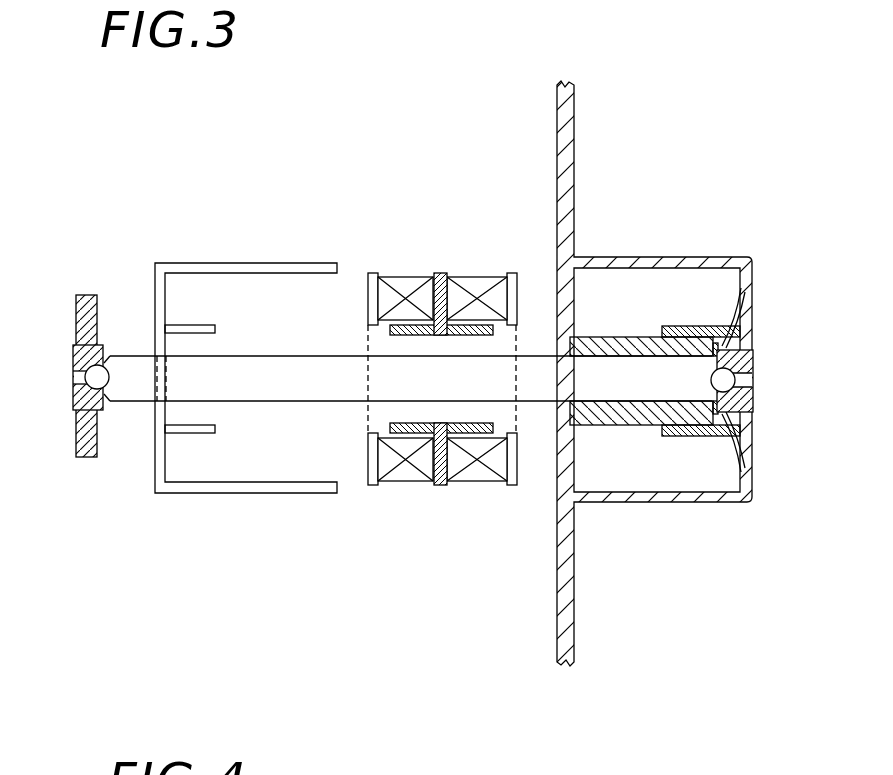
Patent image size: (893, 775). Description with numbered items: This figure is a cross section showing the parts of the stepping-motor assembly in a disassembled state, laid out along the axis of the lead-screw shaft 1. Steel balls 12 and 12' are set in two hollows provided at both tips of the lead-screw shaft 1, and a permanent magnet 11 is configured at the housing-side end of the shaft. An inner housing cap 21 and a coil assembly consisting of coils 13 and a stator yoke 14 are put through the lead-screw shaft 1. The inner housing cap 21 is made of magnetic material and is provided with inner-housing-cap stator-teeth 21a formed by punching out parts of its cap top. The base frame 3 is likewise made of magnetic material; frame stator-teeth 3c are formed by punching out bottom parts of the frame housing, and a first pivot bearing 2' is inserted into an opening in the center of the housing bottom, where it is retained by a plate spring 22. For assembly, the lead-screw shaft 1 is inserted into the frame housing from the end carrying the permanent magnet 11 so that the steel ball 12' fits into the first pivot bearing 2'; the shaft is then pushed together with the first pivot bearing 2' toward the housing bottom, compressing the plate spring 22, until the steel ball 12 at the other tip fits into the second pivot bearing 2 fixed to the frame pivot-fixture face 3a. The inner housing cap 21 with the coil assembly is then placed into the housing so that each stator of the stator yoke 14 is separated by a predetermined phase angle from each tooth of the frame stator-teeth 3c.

The lead-screw shaft 1 is at (317, 387).
The second pivot bearing 2 is at (62, 377).
The first pivot bearing 2' is at (760, 374).
The base frame 3 is at (568, 157).
The frame pivot-fixture face 3a is at (85, 297).
The frame stator-teeth 3c is at (687, 326).
The permanent magnet 11 is at (577, 337).
The steel ball 12 is at (64, 403).
The steel ball 12' is at (763, 396).
The coils 13 is at (478, 465).
The stator yoke 14 is at (437, 485).
The inner housing cap 21 is at (192, 263).
The inner-housing-cap stator-teeth 21a is at (193, 322).
The plate spring 22 is at (737, 313).